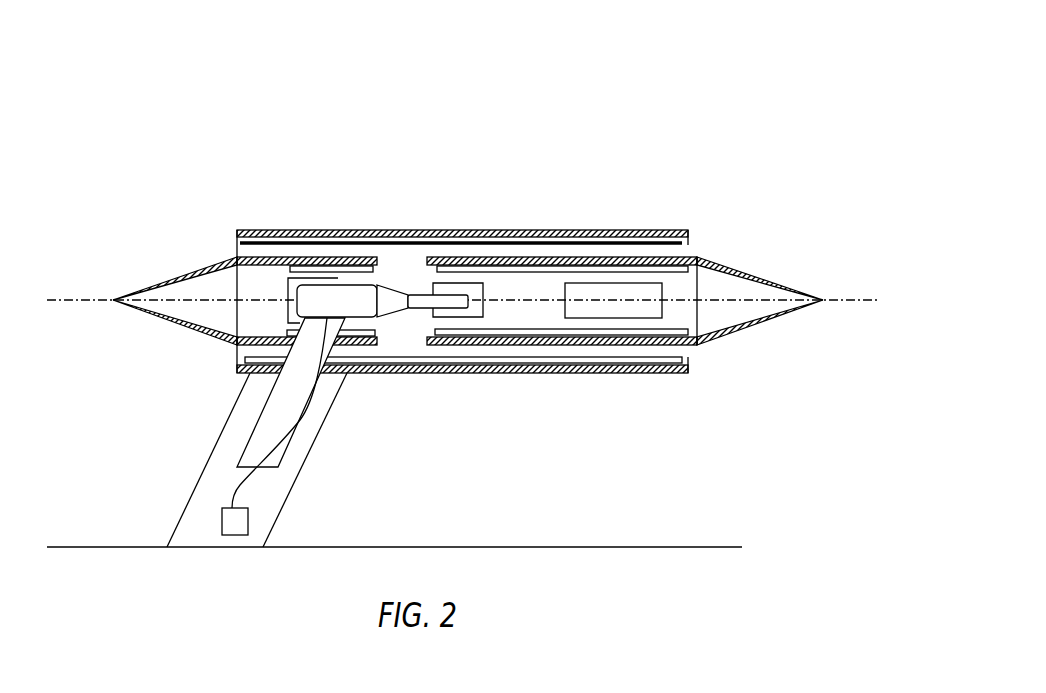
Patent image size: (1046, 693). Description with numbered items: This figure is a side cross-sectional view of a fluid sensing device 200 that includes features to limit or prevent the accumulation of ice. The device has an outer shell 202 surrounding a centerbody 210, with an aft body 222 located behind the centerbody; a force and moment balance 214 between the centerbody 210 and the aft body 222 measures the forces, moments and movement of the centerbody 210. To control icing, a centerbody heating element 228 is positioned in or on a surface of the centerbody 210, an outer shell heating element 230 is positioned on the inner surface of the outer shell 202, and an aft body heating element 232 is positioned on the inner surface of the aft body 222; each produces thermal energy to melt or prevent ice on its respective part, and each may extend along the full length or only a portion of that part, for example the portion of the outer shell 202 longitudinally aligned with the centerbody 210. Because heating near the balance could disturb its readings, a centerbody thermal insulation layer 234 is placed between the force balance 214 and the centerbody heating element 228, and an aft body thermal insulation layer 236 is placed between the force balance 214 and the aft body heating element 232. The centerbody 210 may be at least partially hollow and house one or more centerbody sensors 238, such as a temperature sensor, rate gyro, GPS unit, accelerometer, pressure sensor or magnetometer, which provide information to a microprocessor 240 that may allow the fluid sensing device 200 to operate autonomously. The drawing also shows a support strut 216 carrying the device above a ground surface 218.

The fluid sensing device 200 is at (690, 70).
The outer shell 202 is at (665, 230).
The centerbody 210 is at (743, 272).
The force and moment balance 214 is at (396, 309).
The support strut 216 is at (253, 423).
The ground surface 218 is at (628, 547).
The aft body 222 is at (312, 262).
The centerbody heating element 228 is at (518, 334).
The outer shell heating element 230 is at (517, 243).
The aft body heating element 232 is at (373, 270).
The centerbody thermal insulation layer 234 is at (458, 316).
The aft body thermal insulation layer 236 is at (293, 300).
The centerbody sensor 238 is at (612, 303).
The microprocessor 240 is at (248, 521).